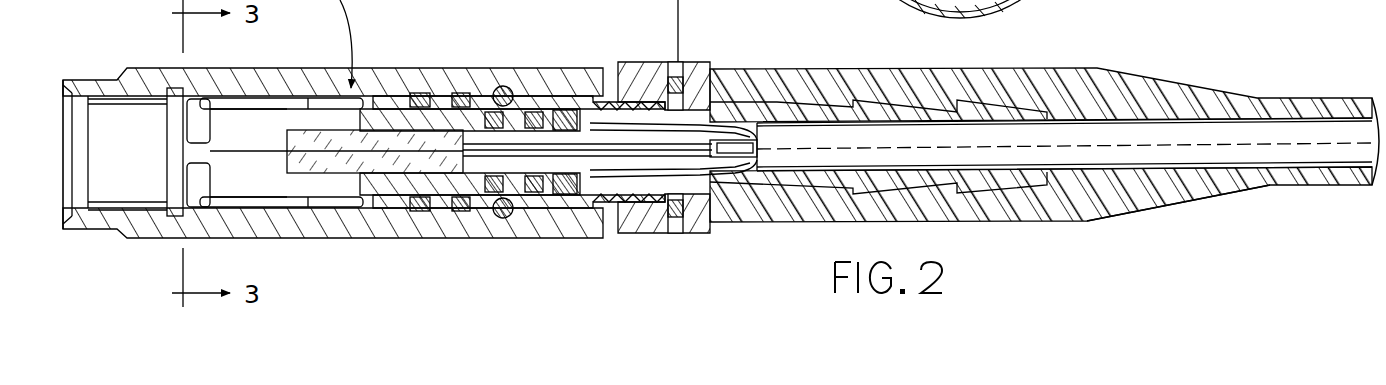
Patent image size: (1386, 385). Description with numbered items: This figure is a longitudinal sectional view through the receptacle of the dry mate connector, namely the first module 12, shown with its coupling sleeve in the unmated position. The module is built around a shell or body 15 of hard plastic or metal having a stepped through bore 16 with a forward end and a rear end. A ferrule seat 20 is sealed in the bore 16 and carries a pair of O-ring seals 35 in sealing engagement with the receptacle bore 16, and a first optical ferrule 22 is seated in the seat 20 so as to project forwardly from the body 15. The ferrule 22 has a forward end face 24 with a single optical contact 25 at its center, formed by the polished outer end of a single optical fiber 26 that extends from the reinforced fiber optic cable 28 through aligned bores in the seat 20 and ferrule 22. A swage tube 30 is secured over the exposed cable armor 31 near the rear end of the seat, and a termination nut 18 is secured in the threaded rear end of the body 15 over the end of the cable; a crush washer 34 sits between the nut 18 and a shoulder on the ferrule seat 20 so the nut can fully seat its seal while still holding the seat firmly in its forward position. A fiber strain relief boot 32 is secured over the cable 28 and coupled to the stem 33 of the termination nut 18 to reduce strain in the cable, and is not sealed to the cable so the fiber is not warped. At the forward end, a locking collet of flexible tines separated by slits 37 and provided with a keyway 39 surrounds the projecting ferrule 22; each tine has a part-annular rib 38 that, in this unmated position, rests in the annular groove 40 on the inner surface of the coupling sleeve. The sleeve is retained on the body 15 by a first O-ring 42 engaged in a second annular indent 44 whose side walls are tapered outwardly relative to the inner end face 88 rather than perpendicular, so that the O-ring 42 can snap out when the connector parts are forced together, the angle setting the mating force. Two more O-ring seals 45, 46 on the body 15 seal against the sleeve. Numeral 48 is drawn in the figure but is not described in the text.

The first module 12 is at (763, 236).
The body 15 is at (1022, 0).
The stepped through bore 16 is at (388, 113).
The termination nut 18 is at (716, 72).
The ferrule seat 20 is at (472, 170).
The first optical ferrule 22 is at (332, 165).
The forward end face 24 is at (283, 140).
The optical contact 25 is at (287, 150).
The optical fiber 26 is at (627, 158).
The fiber optic cable 28 is at (1308, 130).
The swage tube 30 is at (672, 214).
The cable armor 31 is at (702, 124).
The fiber strain relief boot 32 is at (1153, 194).
The stem 33 is at (776, 105).
The crush washer 34 is at (592, 112).
The O-ring seals 35 is at (538, 178).
The slits 37 is at (193, 155).
The part-annular rib 38 is at (193, 112).
The keyway 39 is at (247, 107).
The annular groove 40 is at (139, 67).
The first O-ring 42 is at (505, 212).
The second annular indent 44 is at (565, 112).
The O-ring seal 45 is at (460, 95).
The O-ring seal 46 is at (420, 95).
The housing 48 is at (292, 67).
The inner end face 88 is at (506, 88).